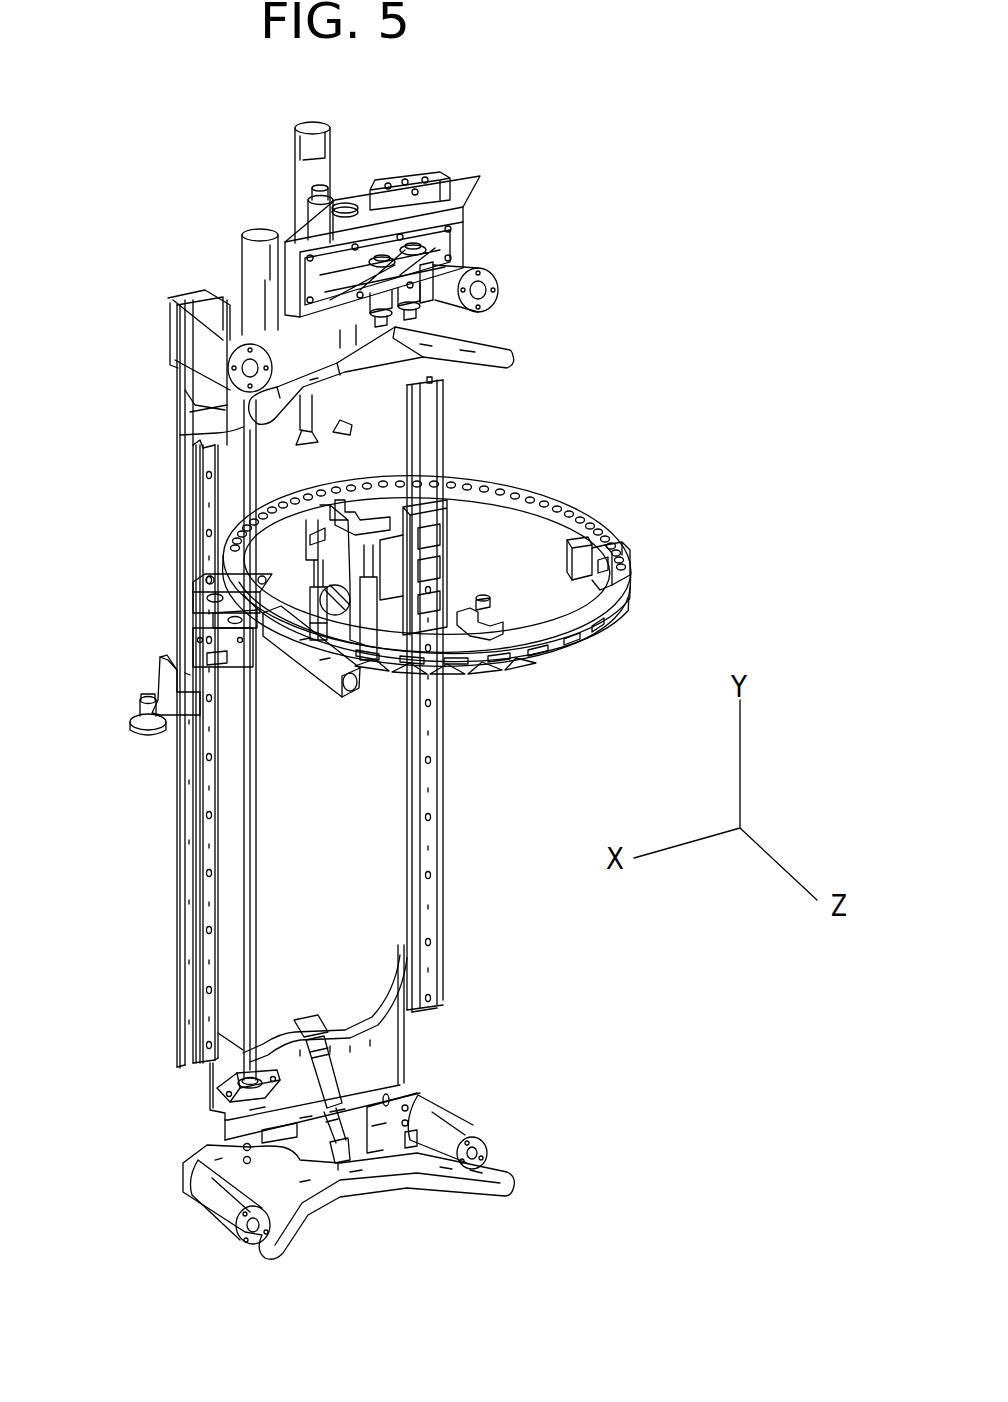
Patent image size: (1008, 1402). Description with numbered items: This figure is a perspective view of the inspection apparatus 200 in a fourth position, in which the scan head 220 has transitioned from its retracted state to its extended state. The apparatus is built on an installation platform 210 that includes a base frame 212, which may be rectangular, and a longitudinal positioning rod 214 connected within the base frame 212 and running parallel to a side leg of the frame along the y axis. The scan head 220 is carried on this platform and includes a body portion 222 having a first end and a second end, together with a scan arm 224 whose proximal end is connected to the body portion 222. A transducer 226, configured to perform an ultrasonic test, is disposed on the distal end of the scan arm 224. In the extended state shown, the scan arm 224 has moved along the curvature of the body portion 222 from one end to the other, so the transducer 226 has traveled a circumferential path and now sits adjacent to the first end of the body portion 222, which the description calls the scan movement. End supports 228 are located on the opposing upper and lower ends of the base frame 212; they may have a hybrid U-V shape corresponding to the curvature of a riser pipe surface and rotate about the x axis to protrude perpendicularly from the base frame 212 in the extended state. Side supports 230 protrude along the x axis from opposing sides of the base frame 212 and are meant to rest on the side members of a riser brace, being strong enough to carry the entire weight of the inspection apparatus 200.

The inspection apparatus 200 is at (488, 124).
The installation platform 210 is at (470, 781).
The base frame 212 is at (177, 875).
The longitudinal positioning rod 214 is at (247, 937).
The scan head 220 is at (620, 613).
The body portion 222 is at (566, 500).
The scan arm 224 is at (537, 666).
The transducer 226 is at (567, 557).
The end support 228 is at (512, 355).
The side support 230 is at (130, 725).